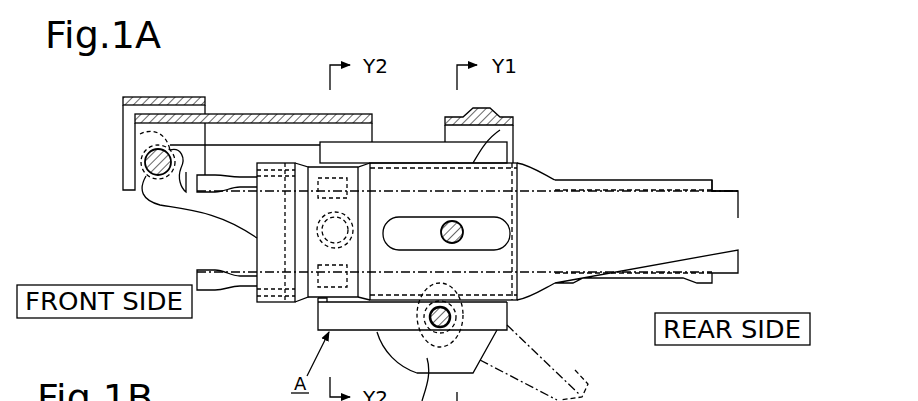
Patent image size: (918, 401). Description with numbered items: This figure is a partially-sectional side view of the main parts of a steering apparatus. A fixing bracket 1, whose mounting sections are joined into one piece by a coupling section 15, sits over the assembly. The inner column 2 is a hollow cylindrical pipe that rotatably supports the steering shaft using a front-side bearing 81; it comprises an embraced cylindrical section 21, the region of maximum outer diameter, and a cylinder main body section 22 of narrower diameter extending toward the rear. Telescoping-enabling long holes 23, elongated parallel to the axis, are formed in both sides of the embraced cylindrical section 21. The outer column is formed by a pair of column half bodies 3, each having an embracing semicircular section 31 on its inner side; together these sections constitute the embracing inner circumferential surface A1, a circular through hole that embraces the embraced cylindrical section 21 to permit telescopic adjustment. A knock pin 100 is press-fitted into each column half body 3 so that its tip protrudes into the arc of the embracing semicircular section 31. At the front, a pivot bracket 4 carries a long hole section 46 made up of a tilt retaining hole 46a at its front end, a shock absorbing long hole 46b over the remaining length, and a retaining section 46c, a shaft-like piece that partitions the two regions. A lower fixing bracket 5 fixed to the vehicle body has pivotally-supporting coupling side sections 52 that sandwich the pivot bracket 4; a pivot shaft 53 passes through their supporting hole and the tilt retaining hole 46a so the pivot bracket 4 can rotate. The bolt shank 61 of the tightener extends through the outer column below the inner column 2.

The fixing bracket 1 is at (466, 374).
The inner column 2 is at (581, 178).
The column half body 3 is at (400, 141).
The pivot bracket 4 is at (295, 112).
The lower fixing bracket 5 is at (183, 96).
The coupling section 15 is at (496, 117).
The embraced cylindrical section 21 is at (500, 130).
The cylinder main body section 22 is at (690, 180).
The telescoping-enabling long hole 23 is at (497, 233).
The embracing semicircular section 31 is at (318, 322).
The long hole section 46 is at (235, 162).
The tilt retaining hole 46a is at (140, 127).
The shock absorbing long hole 46b is at (307, 160).
The retaining section 46c is at (181, 196).
The pivotally-supporting coupling side section 52 is at (122, 163).
The pivot shaft 53 is at (146, 176).
The bolt shank 61 is at (430, 323).
The front-side bearing 81 is at (255, 196).
The knock pin 100 is at (455, 243).
The embracing inner circumferential surface A1 is at (318, 302).